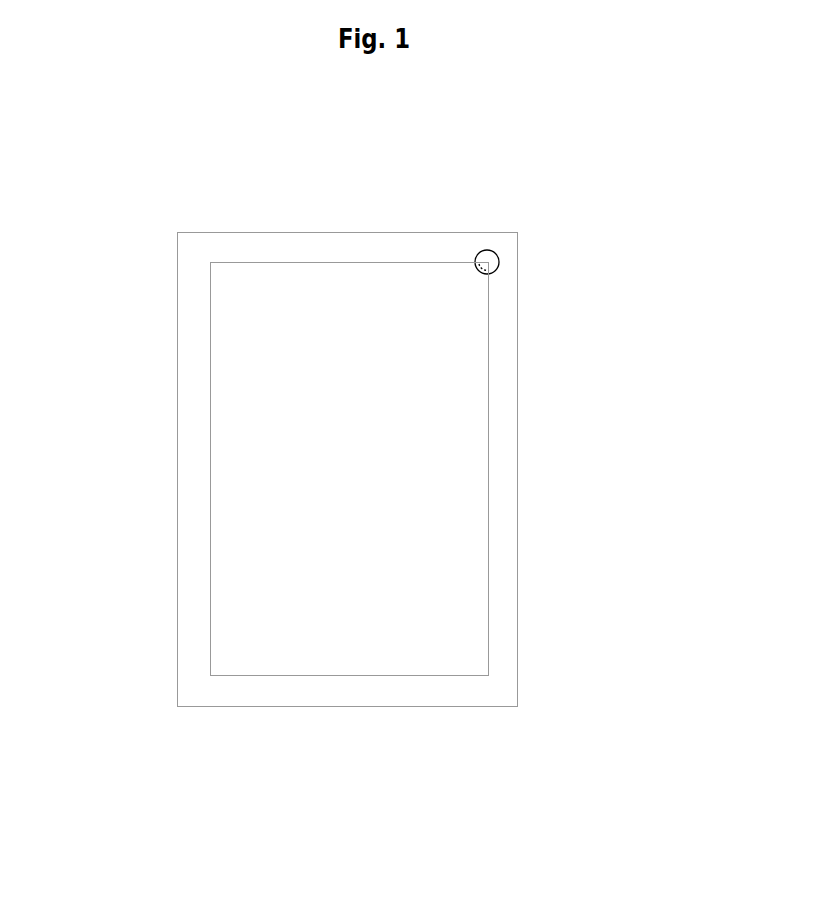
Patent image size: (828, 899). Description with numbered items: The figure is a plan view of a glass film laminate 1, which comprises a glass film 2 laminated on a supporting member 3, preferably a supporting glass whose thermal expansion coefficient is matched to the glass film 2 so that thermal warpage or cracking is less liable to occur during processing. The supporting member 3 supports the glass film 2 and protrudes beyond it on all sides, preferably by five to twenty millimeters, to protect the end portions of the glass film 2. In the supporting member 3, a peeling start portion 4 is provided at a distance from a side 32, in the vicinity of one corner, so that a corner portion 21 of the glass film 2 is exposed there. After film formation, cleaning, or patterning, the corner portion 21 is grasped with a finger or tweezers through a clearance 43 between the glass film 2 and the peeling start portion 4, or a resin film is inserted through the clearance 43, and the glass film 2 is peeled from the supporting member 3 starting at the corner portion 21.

The glass film laminate 1 is at (537, 215).
The glass film 2 is at (240, 282).
The supporting member 3 is at (505, 390).
The side 32 is at (395, 232).
The peeling start portion 4 is at (497, 255).
The clearance 43 is at (493, 262).
The corner portion 21 is at (487, 268).